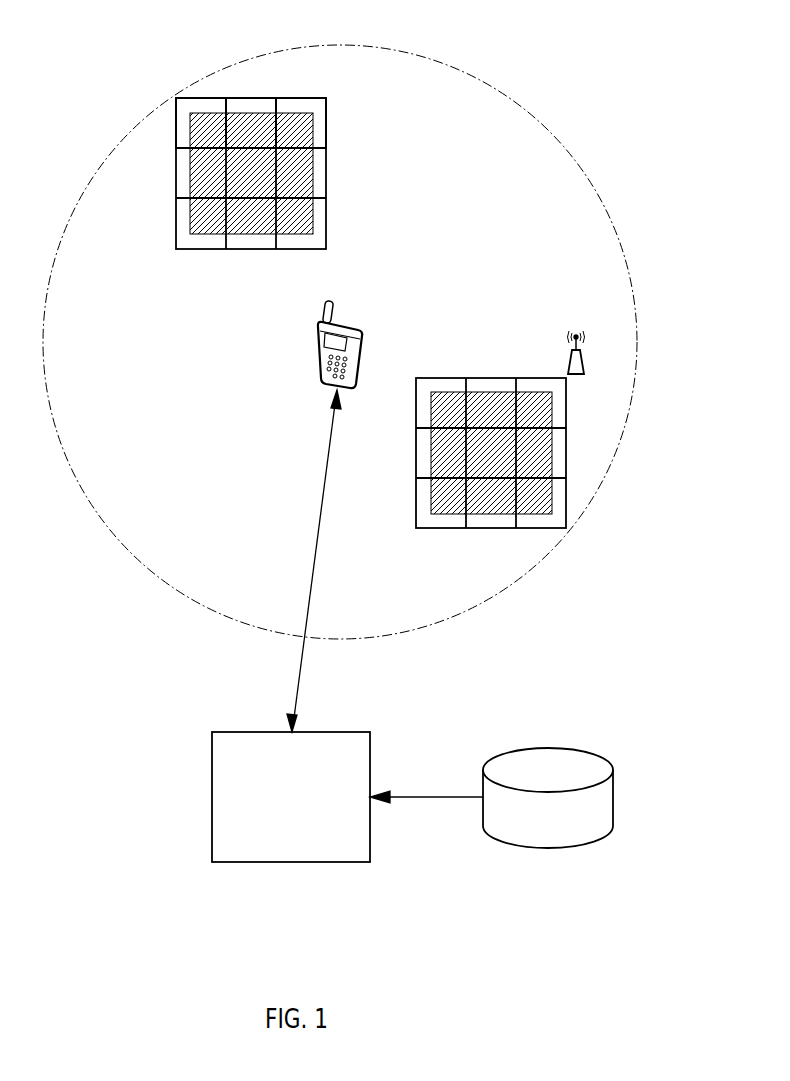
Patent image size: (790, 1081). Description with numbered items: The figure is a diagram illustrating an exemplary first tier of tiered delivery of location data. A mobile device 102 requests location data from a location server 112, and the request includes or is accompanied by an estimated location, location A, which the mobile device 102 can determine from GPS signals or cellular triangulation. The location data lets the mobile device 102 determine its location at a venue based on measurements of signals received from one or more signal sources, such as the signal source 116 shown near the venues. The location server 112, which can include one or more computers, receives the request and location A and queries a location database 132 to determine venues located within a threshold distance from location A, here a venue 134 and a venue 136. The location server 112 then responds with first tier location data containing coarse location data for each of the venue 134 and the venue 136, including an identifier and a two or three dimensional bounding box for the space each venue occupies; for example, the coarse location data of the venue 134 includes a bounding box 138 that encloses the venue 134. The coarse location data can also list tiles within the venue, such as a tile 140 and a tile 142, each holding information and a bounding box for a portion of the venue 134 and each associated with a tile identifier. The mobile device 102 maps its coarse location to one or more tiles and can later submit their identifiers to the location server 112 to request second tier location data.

The mobile device 102 is at (320, 340).
The location server 112 is at (268, 862).
The signal source 116 is at (584, 354).
The location database 132 is at (495, 838).
The venue 134 is at (190, 222).
The venue 136 is at (553, 507).
The bounding box 138 is at (200, 98).
The tile 140 is at (262, 105).
The tile 142 is at (318, 107).